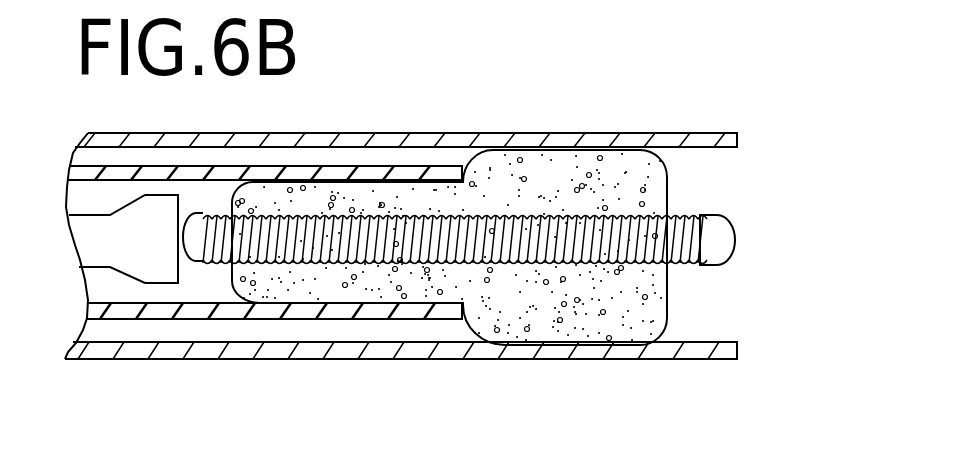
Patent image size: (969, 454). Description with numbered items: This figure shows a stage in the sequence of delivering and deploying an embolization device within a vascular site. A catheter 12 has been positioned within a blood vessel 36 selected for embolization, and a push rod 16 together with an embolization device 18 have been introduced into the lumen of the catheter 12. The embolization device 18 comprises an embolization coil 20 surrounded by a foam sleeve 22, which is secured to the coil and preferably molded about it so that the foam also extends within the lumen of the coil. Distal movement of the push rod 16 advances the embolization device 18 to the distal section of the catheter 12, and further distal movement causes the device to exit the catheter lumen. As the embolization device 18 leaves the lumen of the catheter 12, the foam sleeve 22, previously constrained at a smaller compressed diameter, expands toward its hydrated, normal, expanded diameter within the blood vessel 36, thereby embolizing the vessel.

The catheter 12 is at (343, 170).
The push rod 16 is at (120, 207).
The embolization device 18 is at (737, 235).
The embolization coil 20 is at (727, 257).
The foam sleeve 22 is at (545, 322).
The blood vessel 36 is at (560, 135).